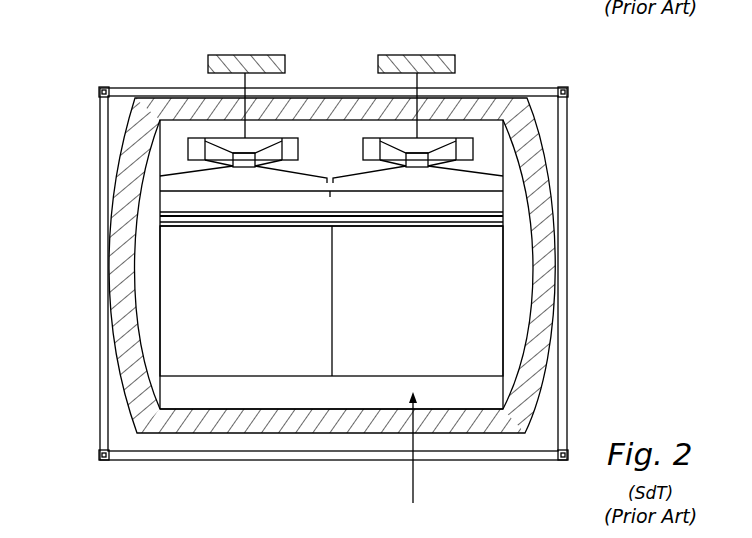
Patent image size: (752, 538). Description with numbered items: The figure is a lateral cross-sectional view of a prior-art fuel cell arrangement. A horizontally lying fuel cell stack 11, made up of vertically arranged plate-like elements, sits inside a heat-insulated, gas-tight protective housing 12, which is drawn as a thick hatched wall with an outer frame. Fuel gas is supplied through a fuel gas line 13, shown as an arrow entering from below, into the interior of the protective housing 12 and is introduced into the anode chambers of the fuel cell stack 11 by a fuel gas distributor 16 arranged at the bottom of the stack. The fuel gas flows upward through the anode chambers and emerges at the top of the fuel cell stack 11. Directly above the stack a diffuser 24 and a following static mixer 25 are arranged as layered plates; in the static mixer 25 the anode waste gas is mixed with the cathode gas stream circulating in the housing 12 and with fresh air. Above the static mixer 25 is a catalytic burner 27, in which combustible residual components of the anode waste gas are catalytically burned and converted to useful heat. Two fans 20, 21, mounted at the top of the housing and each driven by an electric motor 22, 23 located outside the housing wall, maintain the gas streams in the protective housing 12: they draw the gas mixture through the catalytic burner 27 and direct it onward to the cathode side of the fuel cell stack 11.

The fuel cell stack 11 is at (200, 299).
The protective housing 12 is at (180, 110).
The fuel gas line 13 is at (413, 476).
The fuel gas distributor 16 is at (318, 400).
The fan 20 is at (268, 142).
The fan 21 is at (450, 140).
The electric motor 22 is at (232, 55).
The electric motor 23 is at (405, 55).
The diffuser 24 is at (180, 220).
The static mixer 25 is at (172, 204).
The catalytic burner 27 is at (163, 192).